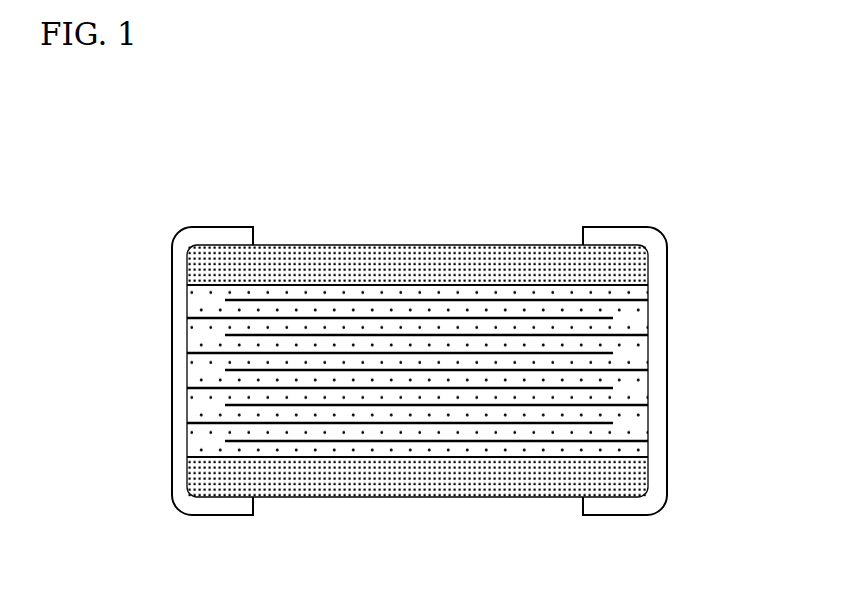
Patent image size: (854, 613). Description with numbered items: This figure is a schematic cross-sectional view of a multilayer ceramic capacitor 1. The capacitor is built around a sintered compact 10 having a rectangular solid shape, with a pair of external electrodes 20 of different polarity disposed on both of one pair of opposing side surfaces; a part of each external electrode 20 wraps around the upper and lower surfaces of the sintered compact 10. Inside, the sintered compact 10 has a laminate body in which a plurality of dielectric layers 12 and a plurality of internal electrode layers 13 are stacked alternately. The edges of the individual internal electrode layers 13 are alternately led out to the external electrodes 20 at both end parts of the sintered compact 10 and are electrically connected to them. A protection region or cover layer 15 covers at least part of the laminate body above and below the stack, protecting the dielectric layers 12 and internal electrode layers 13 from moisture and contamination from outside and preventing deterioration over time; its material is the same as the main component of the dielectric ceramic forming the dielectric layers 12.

The multilayer ceramic capacitor 1 is at (654, 117).
The sintered compact 10 is at (490, 247).
The dielectric layer 12 is at (510, 397).
The internal electrode layer 13 is at (413, 407).
The protection region (cover layer) 15 is at (366, 262).
The external electrode 20 is at (180, 247).